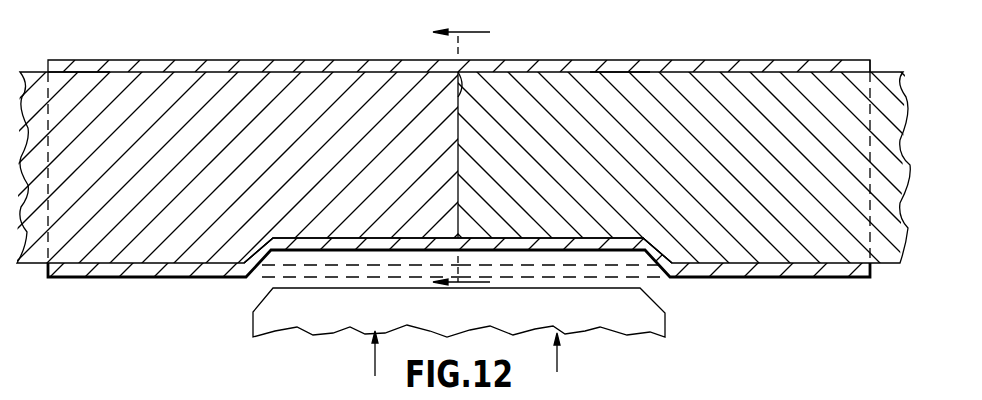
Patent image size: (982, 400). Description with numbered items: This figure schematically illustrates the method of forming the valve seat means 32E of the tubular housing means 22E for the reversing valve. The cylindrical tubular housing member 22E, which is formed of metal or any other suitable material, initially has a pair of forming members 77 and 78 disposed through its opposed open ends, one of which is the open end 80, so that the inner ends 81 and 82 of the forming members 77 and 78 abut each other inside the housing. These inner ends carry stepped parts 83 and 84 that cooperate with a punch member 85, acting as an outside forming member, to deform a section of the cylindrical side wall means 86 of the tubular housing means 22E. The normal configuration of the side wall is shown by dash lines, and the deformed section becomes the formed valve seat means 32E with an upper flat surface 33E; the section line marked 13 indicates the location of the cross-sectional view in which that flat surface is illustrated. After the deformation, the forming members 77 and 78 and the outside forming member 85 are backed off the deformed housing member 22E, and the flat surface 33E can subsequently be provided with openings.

The forming member 77 is at (272, 82).
The forming member 78 is at (43, 60).
The tubular housing means 22E is at (735, 60).
The open end 80 is at (870, 61).
The inner end 81 is at (458, 72).
The inner end 82 is at (457, 175).
The stepped part 83 is at (333, 238).
The stepped part 84 is at (553, 238).
The upper flat surface 33E is at (366, 238).
The valve seat means 32E is at (592, 238).
The punch member 85 is at (647, 324).
The cylindrical side wall means 86 is at (758, 277).
The section line for FIG. 13 is at (474, 155).